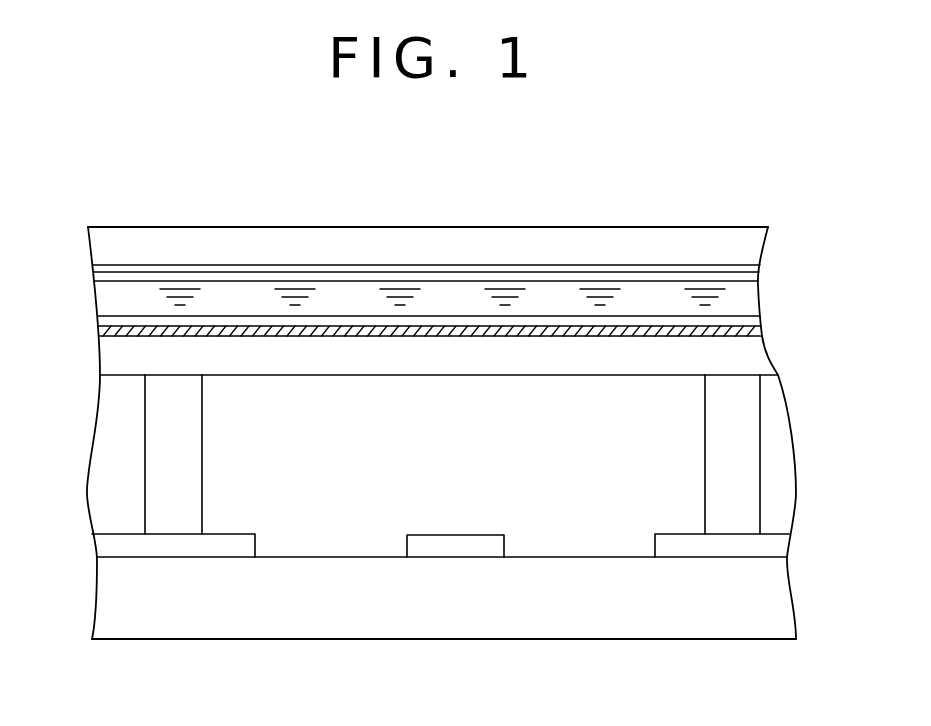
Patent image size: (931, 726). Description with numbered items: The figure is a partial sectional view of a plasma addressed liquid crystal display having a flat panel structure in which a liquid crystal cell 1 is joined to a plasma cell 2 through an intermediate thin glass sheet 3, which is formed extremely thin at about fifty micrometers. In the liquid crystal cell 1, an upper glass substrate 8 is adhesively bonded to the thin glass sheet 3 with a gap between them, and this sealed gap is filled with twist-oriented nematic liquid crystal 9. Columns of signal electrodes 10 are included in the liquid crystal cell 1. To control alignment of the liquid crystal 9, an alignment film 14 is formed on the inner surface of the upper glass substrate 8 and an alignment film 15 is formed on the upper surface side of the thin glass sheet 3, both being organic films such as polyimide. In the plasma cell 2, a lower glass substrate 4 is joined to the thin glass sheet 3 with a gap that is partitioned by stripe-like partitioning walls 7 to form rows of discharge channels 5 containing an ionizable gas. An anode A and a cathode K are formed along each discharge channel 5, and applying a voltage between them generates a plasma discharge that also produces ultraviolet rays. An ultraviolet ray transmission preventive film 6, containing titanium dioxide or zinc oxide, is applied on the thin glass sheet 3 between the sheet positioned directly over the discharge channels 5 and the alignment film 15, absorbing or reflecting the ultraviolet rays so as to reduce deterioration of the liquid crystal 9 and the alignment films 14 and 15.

The liquid crystal cell 1 is at (65, 228).
The plasma cell 2 is at (65, 370).
The intermediate thin glass sheet 3 is at (768, 357).
The lower glass substrate 4 is at (580, 623).
The discharge channel 5 is at (407, 462).
The ultraviolet ray transmission preventive film 6 is at (765, 332).
The partitioning wall 7 is at (738, 455).
The upper glass substrate 8 is at (750, 248).
The nematic liquid crystal 9 is at (745, 300).
The signal electrode 10 is at (449, 268).
The alignment film 14 is at (757, 281).
The alignment film 15 is at (755, 324).
The anode A is at (257, 534).
The cathode K is at (462, 548).